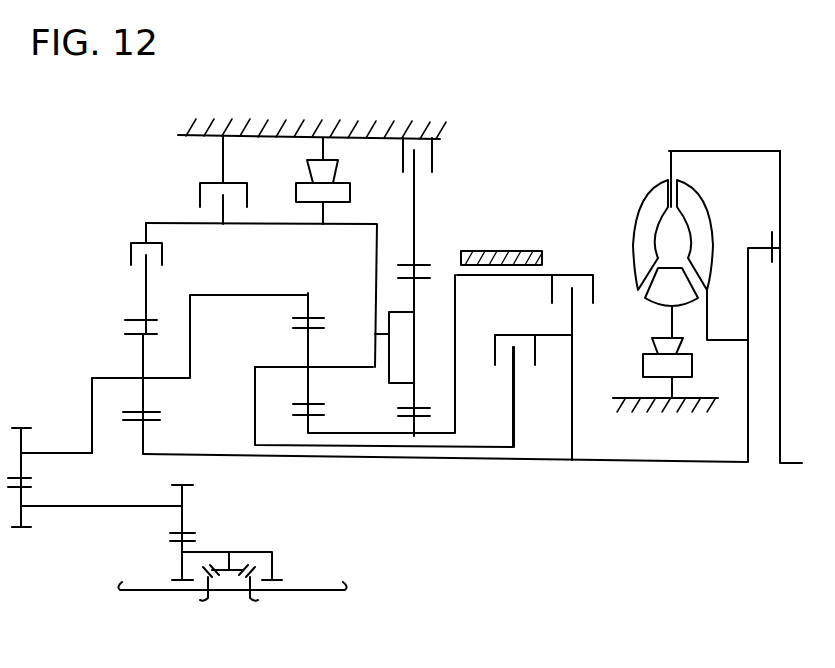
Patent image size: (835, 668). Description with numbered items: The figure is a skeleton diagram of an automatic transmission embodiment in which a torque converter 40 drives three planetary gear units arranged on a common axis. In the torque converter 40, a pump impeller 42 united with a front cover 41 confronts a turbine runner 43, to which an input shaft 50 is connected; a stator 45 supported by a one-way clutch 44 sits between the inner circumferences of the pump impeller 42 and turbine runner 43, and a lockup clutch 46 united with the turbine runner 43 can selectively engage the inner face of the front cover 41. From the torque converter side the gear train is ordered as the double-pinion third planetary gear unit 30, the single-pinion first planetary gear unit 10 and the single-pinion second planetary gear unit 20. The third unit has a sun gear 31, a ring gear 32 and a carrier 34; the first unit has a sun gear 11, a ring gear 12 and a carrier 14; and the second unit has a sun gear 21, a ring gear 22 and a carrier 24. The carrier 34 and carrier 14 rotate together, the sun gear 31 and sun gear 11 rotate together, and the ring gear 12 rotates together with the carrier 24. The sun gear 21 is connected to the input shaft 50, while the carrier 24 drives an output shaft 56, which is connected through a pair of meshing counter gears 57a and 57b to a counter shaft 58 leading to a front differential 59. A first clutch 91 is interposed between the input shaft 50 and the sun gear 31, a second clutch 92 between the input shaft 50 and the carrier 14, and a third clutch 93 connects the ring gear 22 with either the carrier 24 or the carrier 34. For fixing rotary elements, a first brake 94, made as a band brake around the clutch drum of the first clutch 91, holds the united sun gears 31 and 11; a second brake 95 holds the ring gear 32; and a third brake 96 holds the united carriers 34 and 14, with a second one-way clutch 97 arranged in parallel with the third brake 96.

The first planetary gear unit 10 is at (323, 436).
The sun gear 11 is at (300, 413).
The ring gear 12 is at (312, 314).
The carrier 14 is at (287, 366).
The second planetary gear unit 20 is at (184, 428).
The sun gear 21 is at (146, 420).
The ring gear 22 is at (132, 318).
The carrier 24 is at (118, 378).
The third planetary gear unit 30 is at (424, 438).
The sun gear 31 is at (400, 412).
The ring gear 32 is at (418, 262).
The carrier 34 is at (376, 334).
The torque converter 40 is at (687, 146).
The front cover 41 is at (781, 183).
The pump impeller 42 is at (648, 188).
The turbine runner 43 is at (700, 210).
The one-way clutch 44 is at (692, 370).
The stator 45 is at (680, 296).
The lockup clutch 46 is at (776, 250).
The input shaft 50 is at (655, 462).
The output shaft 56 is at (72, 452).
The counter gear 57a is at (22, 427).
The counter gear 57b is at (22, 528).
The counter shaft 58 is at (82, 507).
The front differential 59 is at (219, 614).
The first clutch 91 is at (577, 275).
The second clutch 92 is at (513, 335).
The third clutch 93 is at (133, 243).
The first brake 94 is at (505, 241).
The second brake 95 is at (434, 156).
The third brake 96 is at (205, 183).
The second one-way clutch 97 is at (340, 182).